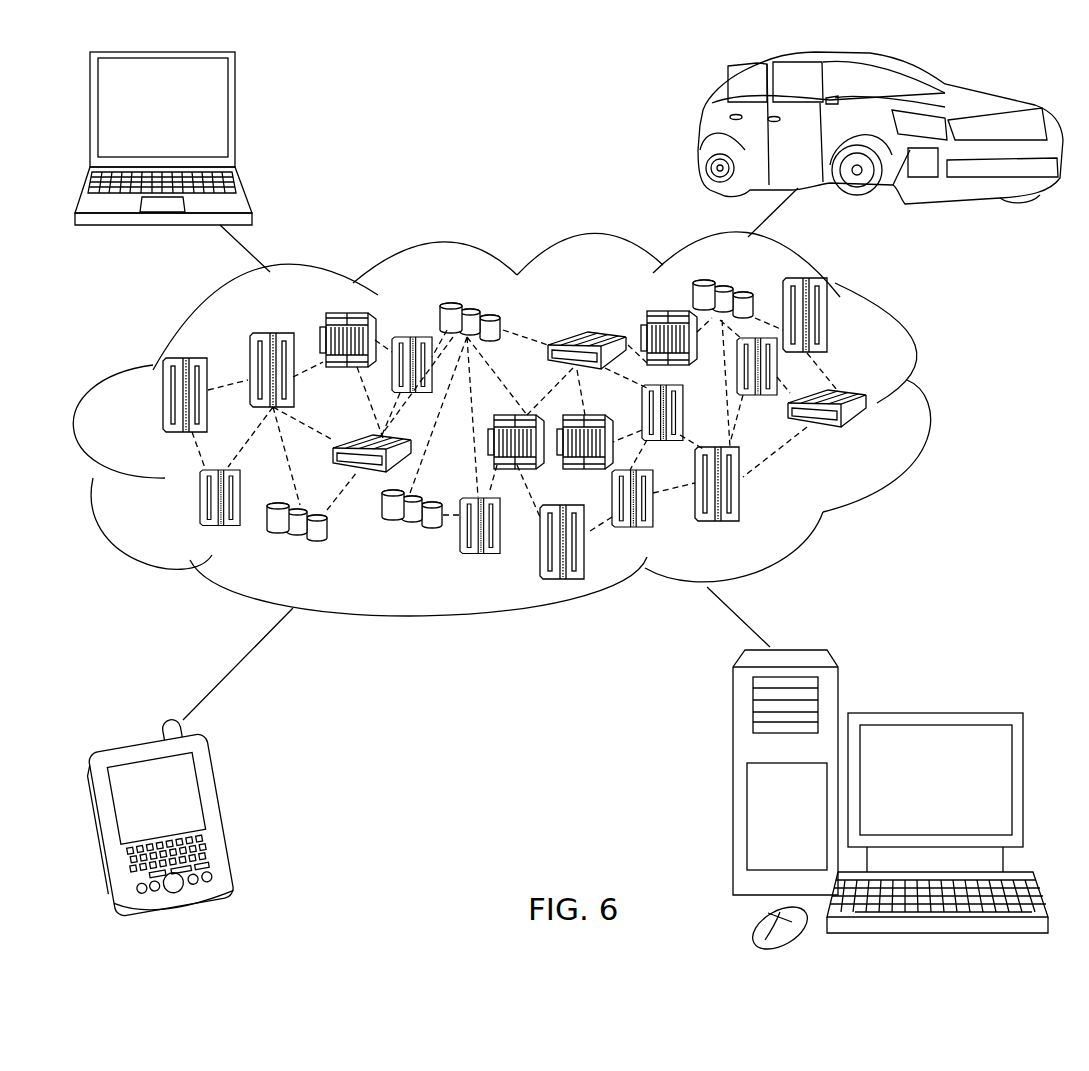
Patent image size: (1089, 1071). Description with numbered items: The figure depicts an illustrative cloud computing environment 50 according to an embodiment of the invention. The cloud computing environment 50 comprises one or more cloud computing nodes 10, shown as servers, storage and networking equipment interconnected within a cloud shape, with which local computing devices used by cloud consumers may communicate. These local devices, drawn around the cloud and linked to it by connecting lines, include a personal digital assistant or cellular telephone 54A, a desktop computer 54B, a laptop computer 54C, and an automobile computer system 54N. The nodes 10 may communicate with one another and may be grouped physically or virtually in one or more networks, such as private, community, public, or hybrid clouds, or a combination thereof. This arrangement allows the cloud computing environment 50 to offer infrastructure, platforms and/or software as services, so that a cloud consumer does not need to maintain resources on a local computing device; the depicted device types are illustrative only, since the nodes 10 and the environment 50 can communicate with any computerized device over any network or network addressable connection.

The cloud computing node 10 is at (873, 441).
The cloud computing environment 50 is at (933, 405).
The personal digital assistant or cellular telephone 54A is at (227, 812).
The desktop computer 54B is at (928, 712).
The laptop computer 54C is at (236, 117).
The automobile computer system 54N is at (700, 133).